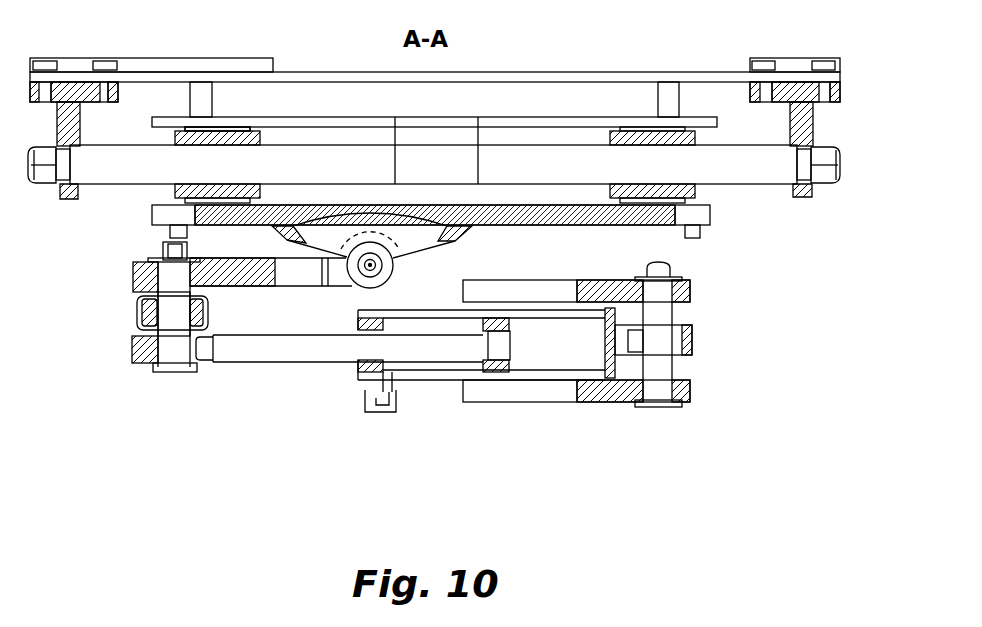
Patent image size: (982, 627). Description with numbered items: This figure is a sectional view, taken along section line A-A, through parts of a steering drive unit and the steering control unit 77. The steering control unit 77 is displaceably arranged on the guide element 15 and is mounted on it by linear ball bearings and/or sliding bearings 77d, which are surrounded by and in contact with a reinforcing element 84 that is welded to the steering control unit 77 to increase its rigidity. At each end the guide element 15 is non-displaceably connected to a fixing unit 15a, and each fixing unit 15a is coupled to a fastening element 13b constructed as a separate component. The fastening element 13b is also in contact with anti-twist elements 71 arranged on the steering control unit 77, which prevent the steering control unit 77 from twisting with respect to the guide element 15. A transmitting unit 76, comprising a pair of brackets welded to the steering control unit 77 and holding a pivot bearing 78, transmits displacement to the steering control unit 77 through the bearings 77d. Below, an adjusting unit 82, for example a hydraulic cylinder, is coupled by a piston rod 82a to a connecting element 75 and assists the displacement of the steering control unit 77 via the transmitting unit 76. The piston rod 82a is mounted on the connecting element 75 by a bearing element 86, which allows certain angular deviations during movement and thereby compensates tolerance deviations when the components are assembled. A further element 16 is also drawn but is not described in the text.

The fastening element 13b is at (532, 78).
The anti-twist element 71 is at (667, 103).
The reinforcing element 84 is at (197, 129).
The linear ball bearing or sliding bearing 77d is at (220, 137).
The guide element 15 is at (748, 168).
The fixing unit 15a is at (64, 198).
The steering control unit 77 is at (650, 214).
The transmitting unit 76 is at (475, 231).
The pivot bearing 78 is at (382, 263).
The lever arm 16 is at (258, 275).
The bearing element 86 is at (146, 340).
The connecting element 75 is at (174, 344).
The piston rod 82a is at (293, 353).
The adjusting unit 82 is at (450, 363).